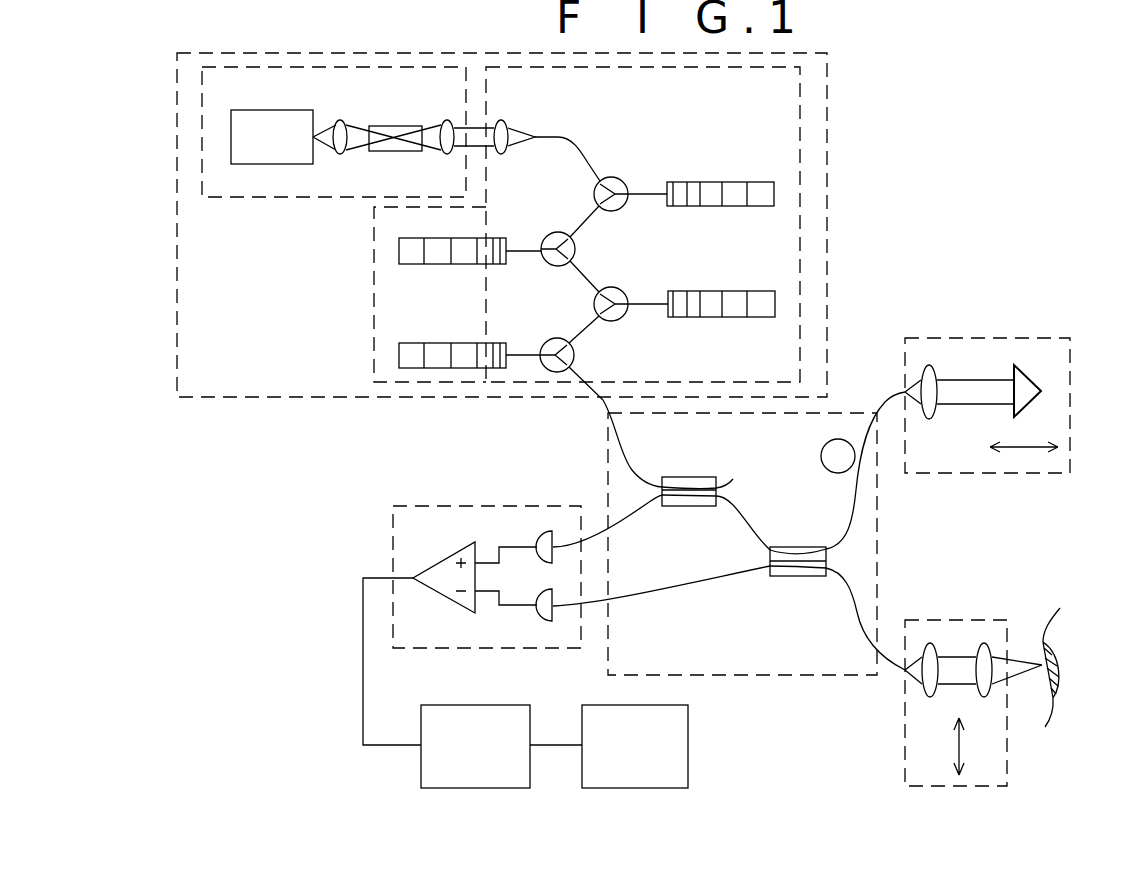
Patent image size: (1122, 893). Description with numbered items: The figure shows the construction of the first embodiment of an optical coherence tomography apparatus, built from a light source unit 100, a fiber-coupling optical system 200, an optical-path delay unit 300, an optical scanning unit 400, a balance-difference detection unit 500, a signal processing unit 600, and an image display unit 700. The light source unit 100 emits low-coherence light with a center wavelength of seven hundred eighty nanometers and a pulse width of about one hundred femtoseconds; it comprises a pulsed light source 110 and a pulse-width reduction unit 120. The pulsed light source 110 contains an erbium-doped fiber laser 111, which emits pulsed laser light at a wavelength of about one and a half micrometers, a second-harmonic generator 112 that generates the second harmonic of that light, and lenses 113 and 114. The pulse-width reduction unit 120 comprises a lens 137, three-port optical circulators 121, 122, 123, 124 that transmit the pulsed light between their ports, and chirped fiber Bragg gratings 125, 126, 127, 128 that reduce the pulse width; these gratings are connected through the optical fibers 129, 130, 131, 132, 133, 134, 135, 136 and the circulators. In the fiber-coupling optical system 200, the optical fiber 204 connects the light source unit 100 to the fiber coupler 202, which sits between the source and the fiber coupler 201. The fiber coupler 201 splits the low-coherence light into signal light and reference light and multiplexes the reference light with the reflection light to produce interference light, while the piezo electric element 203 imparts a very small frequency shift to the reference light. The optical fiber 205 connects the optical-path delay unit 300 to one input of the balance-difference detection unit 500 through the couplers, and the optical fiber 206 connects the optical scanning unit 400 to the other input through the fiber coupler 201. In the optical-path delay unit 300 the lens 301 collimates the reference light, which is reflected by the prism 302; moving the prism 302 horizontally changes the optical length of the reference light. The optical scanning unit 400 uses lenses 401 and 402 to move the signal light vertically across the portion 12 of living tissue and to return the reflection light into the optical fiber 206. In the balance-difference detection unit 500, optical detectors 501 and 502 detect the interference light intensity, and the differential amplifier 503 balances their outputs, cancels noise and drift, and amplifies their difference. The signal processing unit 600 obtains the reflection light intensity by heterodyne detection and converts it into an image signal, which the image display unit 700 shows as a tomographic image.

The light source unit 100 is at (843, 126).
The pulsed light source 110 is at (262, 200).
The erbium-doped fiber laser 111 is at (290, 108).
The second-harmonic generator 112 is at (395, 126).
The lens 113 is at (340, 153).
The lens 114 is at (447, 152).
The pulse-width reduction unit 120 is at (372, 318).
The optical circulator 121 is at (620, 182).
The optical circulator 122 is at (580, 250).
The optical circulator 123 is at (623, 323).
The optical circulator 124 is at (557, 334).
The chirped fiber Bragg grating 125 is at (720, 182).
The chirped fiber Bragg grating 126 is at (440, 267).
The chirped fiber Bragg grating 127 is at (728, 290).
The chirped fiber Bragg grating 128 is at (458, 342).
The optical fiber 129 is at (583, 140).
The optical fiber 130 is at (643, 197).
The optical fiber 131 is at (580, 223).
The optical fiber 132 is at (522, 245).
The optical fiber 133 is at (592, 282).
The optical fiber 134 is at (652, 300).
The optical fiber 135 is at (588, 333).
The optical fiber 136 is at (522, 350).
The lens 137 is at (503, 117).
The fiber-coupling optical system 200 is at (757, 678).
The fiber coupler 201 is at (790, 545).
The fiber coupler 202 is at (683, 508).
The piezo electric element 203 is at (820, 458).
The optical fiber 204 is at (632, 458).
The optical fiber 205 is at (853, 514).
The optical fiber 206 is at (857, 614).
The optical-path delay unit 300 is at (995, 335).
The lens 301 is at (930, 363).
The prism 302 is at (1027, 367).
The optical scanning unit 400 is at (966, 787).
The lens 401 is at (927, 698).
The lens 402 is at (988, 697).
The portion 12 is at (1060, 645).
The balance-difference detection unit 500 is at (555, 490).
The optical detector 501 is at (540, 530).
The optical detector 502 is at (543, 618).
The differential amplifier 503 is at (447, 557).
The signal processing unit 600 is at (490, 788).
The image display unit 700 is at (638, 788).